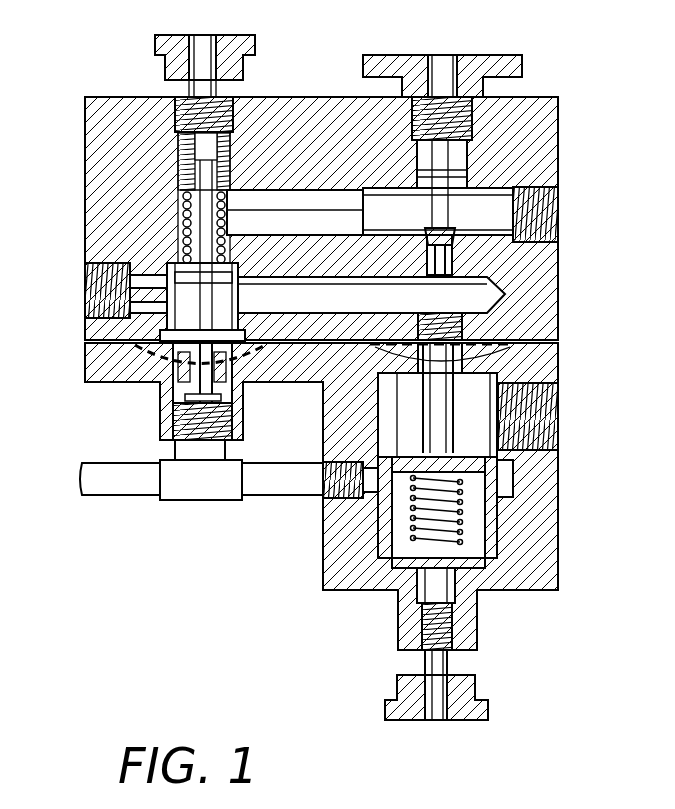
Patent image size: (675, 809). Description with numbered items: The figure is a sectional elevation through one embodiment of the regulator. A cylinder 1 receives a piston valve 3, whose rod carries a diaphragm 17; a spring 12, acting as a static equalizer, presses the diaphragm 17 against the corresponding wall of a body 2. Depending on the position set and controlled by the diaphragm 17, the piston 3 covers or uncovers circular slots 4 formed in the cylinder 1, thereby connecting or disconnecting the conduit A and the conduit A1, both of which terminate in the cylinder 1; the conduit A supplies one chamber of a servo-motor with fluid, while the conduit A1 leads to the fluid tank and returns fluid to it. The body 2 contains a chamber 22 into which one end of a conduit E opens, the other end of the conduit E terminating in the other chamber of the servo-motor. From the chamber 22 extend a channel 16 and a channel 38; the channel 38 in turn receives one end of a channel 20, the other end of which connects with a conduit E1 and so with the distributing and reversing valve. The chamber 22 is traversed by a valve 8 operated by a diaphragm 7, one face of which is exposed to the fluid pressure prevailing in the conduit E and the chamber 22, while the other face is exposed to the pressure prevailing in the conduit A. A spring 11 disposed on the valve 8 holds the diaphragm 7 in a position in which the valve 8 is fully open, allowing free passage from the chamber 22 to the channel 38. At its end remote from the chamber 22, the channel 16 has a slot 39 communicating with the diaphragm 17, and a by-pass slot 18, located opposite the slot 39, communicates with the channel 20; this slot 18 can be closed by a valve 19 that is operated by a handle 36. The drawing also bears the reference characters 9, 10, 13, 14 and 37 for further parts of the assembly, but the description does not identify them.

The cylinder 1 is at (338, 408).
The body 2 is at (310, 105).
The piston valve 3 is at (377, 531).
The circular slots 4 is at (392, 518).
The diaphragm 7 is at (158, 379).
The valve 8 is at (177, 278).
The gland 9 is at (238, 97).
The nut 10 is at (162, 45).
The spring 11 is at (180, 218).
The spring 12 is at (470, 518).
The gland 13 is at (428, 618).
The nut 14 is at (405, 695).
The channel 16 is at (306, 300).
The diaphragm 17 is at (492, 345).
The by-pass slot 18 is at (447, 262).
The valve 19 is at (450, 238).
The channel 20 is at (385, 205).
The chamber 22 is at (180, 301).
The handle 36 is at (492, 62).
The gland 37 is at (172, 403).
The channel 38 is at (178, 195).
The slot 39 is at (468, 331).
The conduit A is at (142, 484).
The conduit A1 is at (540, 432).
The conduit E is at (107, 317).
The conduit E1 is at (552, 225).